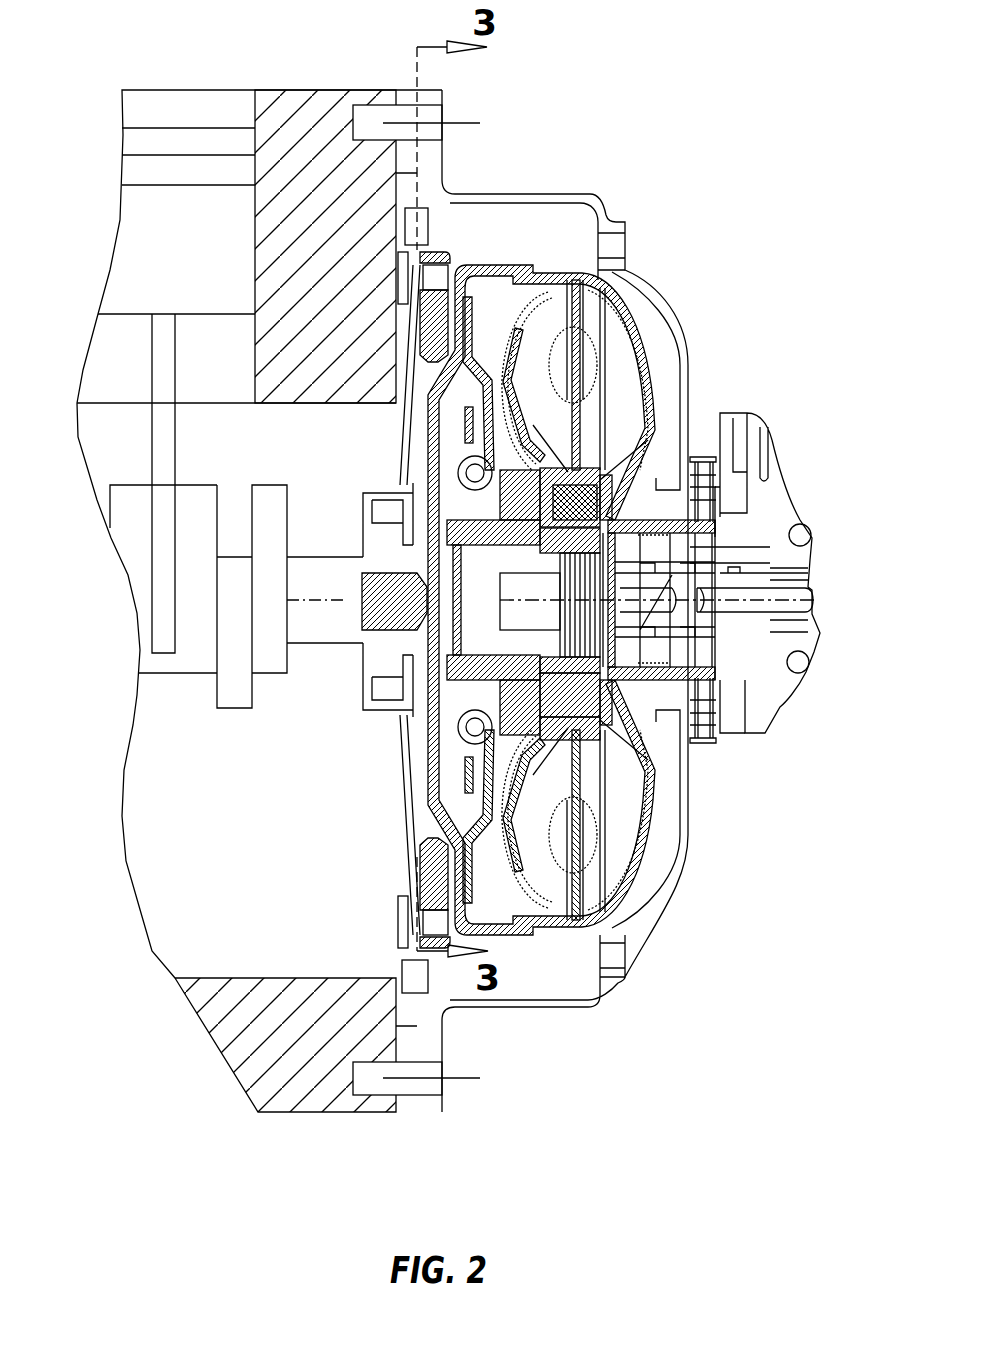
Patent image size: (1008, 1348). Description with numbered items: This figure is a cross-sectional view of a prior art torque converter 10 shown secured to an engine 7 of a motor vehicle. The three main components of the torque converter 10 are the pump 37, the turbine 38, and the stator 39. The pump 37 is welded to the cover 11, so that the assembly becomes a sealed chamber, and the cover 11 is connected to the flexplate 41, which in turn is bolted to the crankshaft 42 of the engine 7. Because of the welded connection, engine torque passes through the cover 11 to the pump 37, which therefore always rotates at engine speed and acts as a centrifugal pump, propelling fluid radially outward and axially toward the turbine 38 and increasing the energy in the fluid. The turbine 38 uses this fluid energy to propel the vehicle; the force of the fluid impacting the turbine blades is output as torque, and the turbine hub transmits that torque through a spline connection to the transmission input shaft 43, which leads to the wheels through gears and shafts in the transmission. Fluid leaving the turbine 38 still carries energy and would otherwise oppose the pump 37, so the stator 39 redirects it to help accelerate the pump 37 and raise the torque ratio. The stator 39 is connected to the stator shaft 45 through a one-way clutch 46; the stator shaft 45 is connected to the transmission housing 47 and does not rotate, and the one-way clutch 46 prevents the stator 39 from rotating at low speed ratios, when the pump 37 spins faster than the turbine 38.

The engine 7 is at (417, 1012).
The torque converter 10 is at (646, 323).
The cover 11 is at (413, 438).
The pump 37 is at (647, 879).
The turbine 38 is at (503, 880).
The stator 39 is at (540, 780).
The flexplate 41 is at (410, 762).
The crankshaft 42 is at (345, 657).
The transmission input shaft 43 is at (750, 618).
The stator shaft 45 is at (748, 533).
The one-way clutch 46 is at (607, 712).
The transmission housing 47 is at (778, 498).